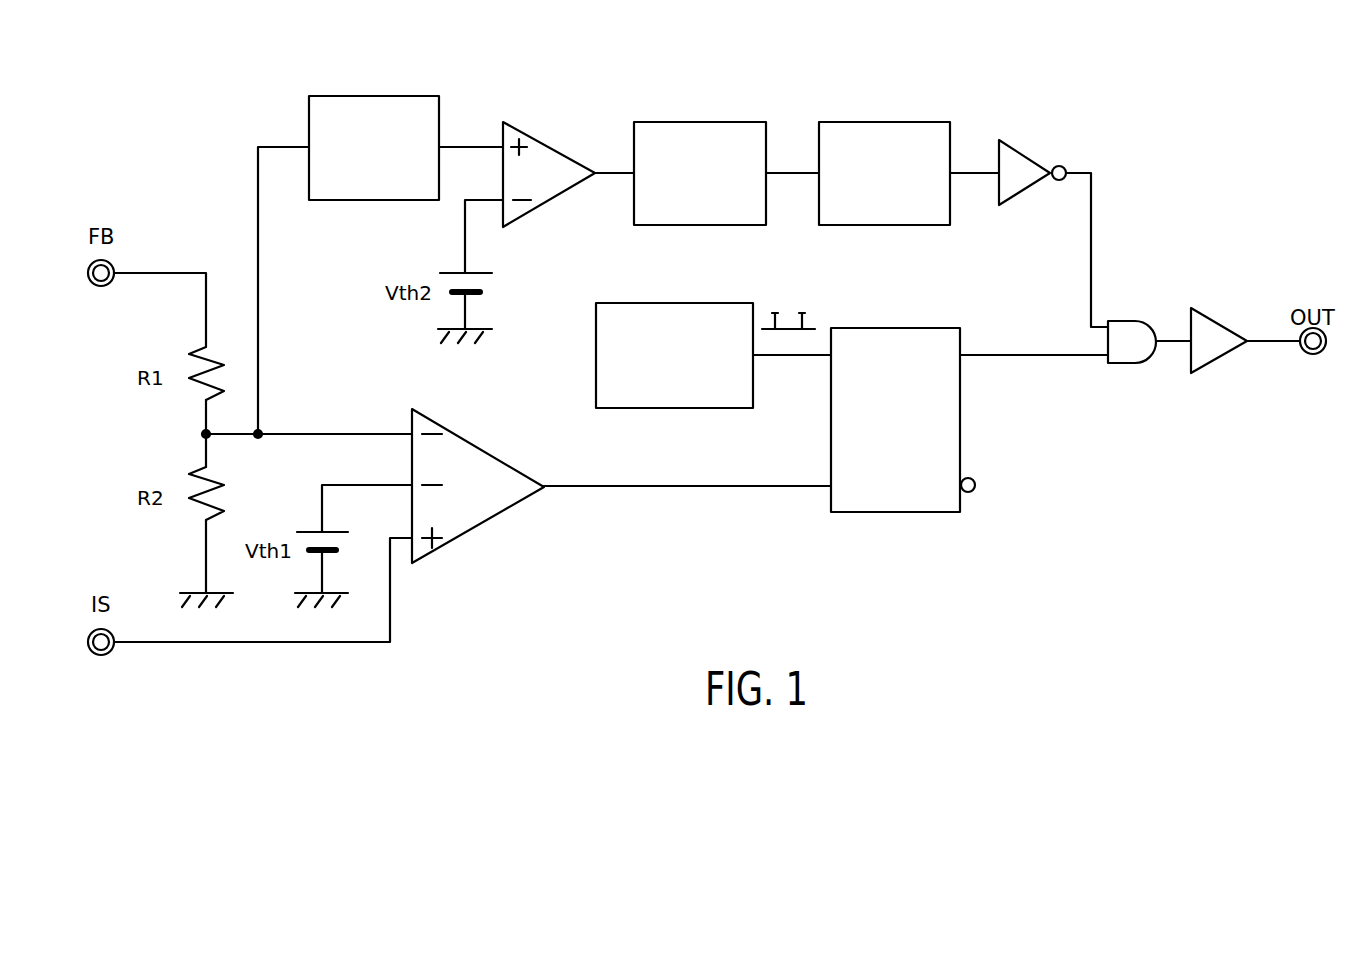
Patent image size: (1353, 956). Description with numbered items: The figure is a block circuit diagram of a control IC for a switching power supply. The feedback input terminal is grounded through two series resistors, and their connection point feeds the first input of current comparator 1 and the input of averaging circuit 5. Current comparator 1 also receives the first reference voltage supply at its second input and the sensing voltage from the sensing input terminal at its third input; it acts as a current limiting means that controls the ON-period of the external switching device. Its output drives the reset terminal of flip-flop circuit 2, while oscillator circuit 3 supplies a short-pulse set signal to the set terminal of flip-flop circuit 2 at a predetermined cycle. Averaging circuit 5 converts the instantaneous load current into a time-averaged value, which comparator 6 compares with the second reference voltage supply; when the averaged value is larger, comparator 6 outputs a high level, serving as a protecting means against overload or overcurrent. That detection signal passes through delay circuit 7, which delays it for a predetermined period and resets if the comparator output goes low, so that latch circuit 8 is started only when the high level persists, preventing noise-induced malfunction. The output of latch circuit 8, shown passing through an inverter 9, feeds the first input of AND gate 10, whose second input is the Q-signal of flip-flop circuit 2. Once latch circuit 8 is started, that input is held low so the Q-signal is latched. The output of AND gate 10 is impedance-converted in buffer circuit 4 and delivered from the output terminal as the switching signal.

The current comparator 1 is at (457, 540).
The flip-flop circuit 2 is at (897, 328).
The oscillator circuit 3 is at (677, 303).
The buffer circuit 4 is at (1215, 362).
The averaging circuit 5 is at (366, 96).
The comparator 6 is at (538, 210).
The delay circuit 7 is at (697, 122).
The latch circuit 8 is at (882, 122).
The inverter 9 is at (1023, 197).
The AND gate 10 is at (1128, 363).